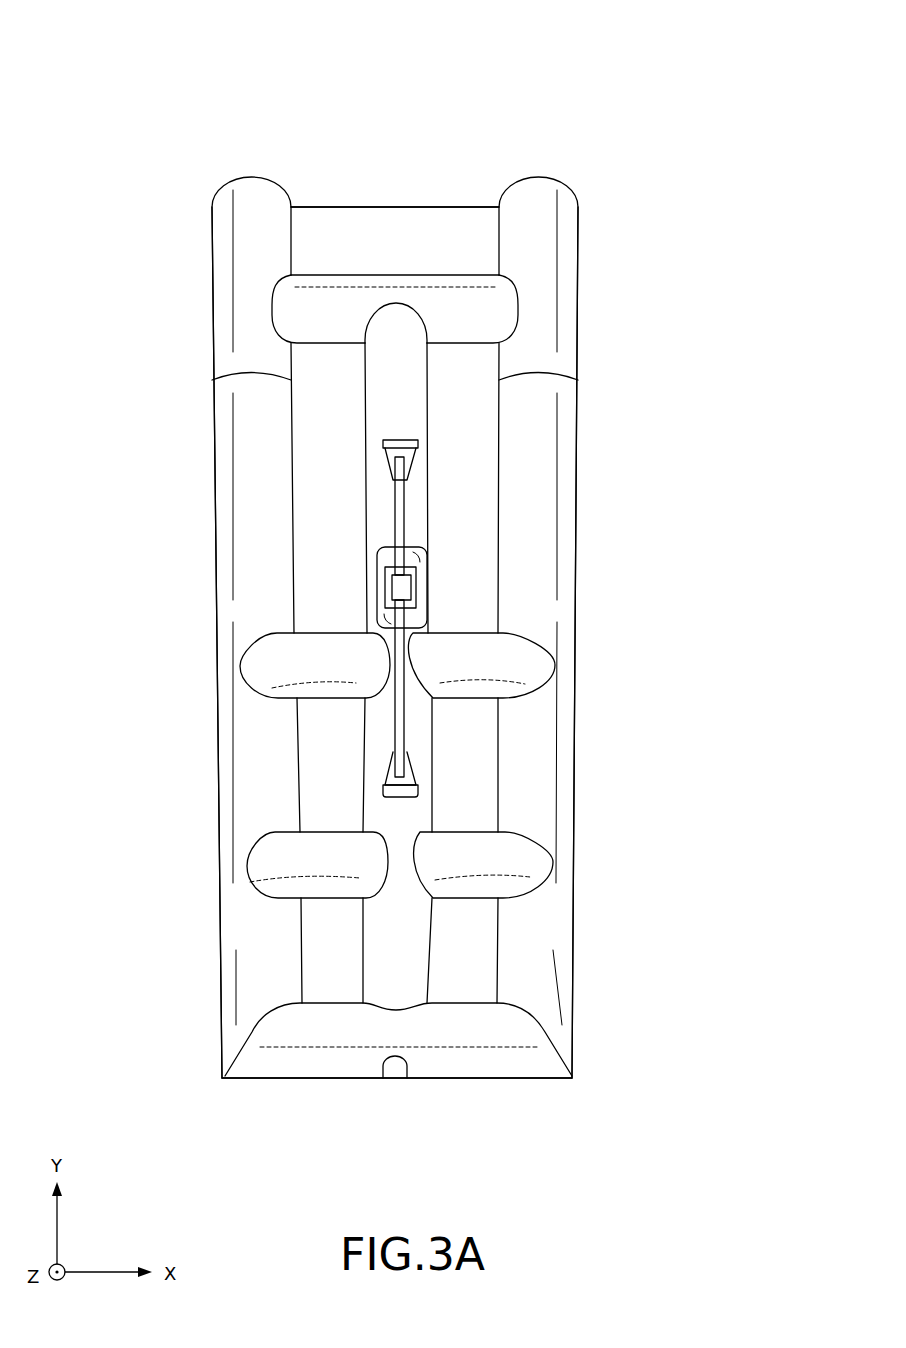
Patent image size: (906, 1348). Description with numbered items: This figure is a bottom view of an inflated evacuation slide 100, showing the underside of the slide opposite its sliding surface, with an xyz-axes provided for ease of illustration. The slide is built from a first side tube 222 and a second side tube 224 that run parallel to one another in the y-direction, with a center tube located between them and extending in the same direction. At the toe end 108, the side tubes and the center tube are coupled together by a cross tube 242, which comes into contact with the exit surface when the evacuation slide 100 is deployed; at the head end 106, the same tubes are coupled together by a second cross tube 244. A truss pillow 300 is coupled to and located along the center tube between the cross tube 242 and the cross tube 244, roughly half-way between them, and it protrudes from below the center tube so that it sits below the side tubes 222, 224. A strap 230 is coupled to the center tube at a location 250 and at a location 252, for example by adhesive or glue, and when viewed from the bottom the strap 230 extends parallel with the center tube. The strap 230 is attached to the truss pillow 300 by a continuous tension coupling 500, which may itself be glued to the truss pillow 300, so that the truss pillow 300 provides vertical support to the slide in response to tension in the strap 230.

The evacuation slide 100 is at (664, 132).
The head end 106 is at (427, 134).
The toe end 108 is at (393, 1099).
The first side tube 222 is at (545, 402).
The second side tube 224 is at (225, 438).
The strap 230 is at (400, 510).
The cross tube 242 is at (472, 1032).
The cross tube 244 is at (500, 298).
The location 250 is at (408, 791).
The location 252 is at (412, 453).
The truss pillow 300 is at (418, 578).
The continuous tension coupling 500 is at (393, 582).